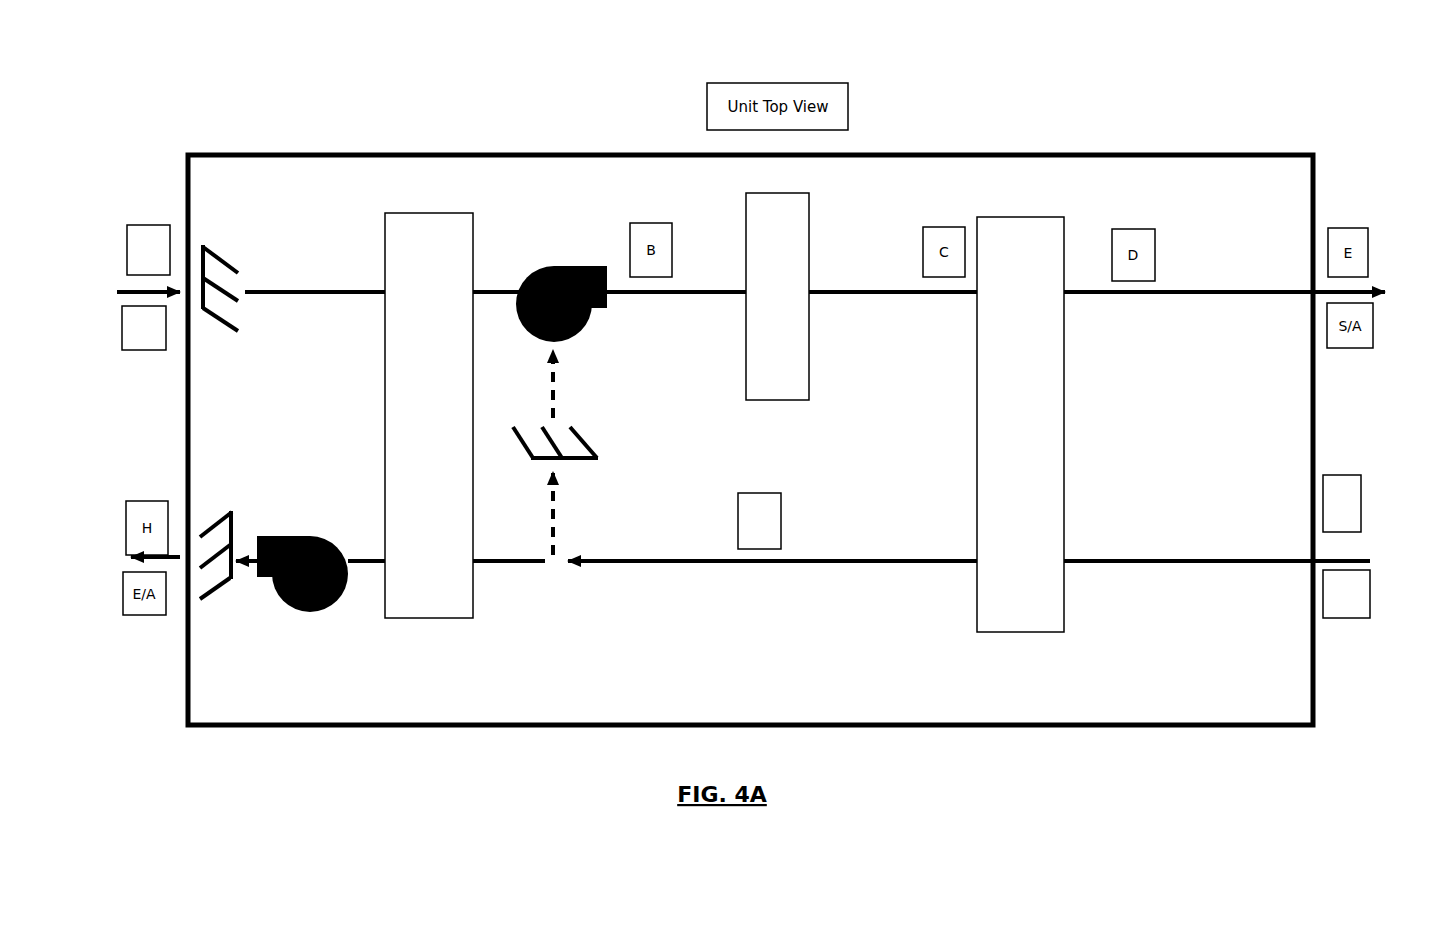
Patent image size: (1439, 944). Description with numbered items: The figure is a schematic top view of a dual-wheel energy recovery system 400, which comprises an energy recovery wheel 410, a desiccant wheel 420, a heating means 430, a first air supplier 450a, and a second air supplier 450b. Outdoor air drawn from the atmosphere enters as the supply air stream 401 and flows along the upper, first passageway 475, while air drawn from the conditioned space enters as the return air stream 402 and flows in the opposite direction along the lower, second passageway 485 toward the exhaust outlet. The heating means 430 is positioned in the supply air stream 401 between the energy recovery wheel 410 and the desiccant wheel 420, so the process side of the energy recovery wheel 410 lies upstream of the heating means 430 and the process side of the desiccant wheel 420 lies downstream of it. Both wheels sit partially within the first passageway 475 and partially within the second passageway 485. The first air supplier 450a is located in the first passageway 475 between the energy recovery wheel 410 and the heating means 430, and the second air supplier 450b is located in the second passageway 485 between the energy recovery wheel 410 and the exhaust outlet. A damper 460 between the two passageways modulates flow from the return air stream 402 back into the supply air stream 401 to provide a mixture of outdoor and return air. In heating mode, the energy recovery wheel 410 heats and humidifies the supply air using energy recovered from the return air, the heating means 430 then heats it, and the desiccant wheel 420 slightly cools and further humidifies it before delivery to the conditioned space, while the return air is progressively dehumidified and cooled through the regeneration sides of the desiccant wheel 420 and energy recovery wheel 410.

The system 400 is at (187, 142).
The supply air stream 401 is at (111, 283).
The return air stream 402 is at (1380, 553).
The energy recovery wheel 410 is at (429, 415).
The desiccant wheel 420 is at (1020, 424).
The heating means 430 is at (777, 296).
The first air supplier 450a is at (572, 257).
The second air supplier 450b is at (301, 525).
The damper 460 is at (603, 447).
The first passageway 475 is at (881, 300).
The second passageway 485 is at (871, 553).